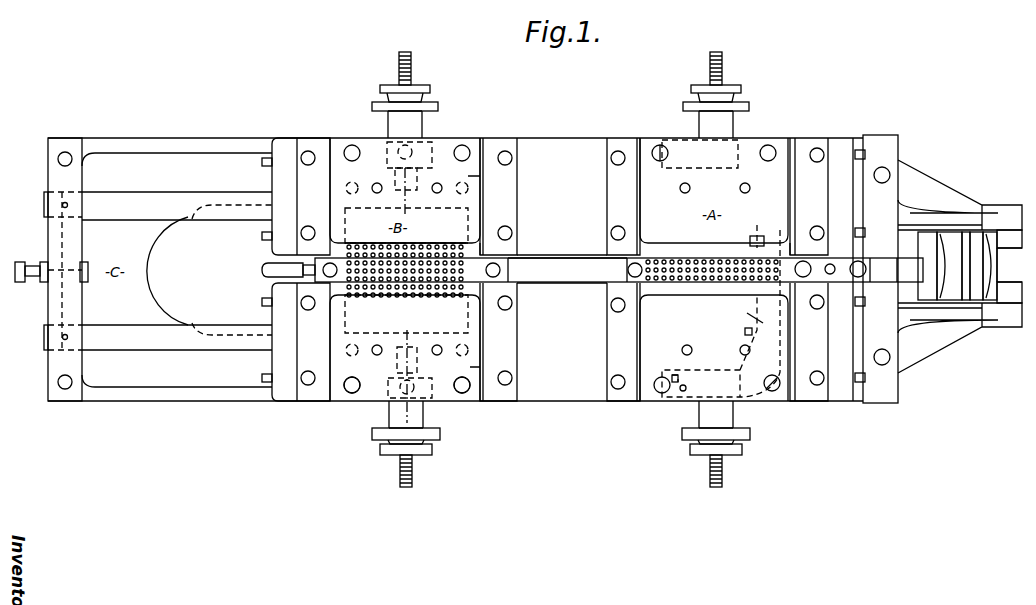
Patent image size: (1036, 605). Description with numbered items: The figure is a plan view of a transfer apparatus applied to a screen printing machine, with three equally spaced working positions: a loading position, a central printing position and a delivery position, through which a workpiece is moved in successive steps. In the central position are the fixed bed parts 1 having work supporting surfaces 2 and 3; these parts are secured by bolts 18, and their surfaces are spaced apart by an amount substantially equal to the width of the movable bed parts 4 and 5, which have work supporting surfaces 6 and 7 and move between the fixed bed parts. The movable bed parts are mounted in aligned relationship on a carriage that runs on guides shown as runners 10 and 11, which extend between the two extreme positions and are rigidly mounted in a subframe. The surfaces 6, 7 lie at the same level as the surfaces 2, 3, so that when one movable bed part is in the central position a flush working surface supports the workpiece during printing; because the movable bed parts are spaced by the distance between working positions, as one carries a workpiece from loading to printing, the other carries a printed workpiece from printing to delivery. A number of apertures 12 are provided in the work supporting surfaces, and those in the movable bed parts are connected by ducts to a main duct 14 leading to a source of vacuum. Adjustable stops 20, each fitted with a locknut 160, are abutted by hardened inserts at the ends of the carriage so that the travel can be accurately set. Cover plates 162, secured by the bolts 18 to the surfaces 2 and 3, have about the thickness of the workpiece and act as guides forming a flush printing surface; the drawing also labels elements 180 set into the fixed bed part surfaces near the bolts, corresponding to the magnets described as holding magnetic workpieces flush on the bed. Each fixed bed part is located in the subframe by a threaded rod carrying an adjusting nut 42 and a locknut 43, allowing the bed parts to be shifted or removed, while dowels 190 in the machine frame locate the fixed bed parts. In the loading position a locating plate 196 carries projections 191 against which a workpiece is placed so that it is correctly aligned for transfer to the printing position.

The fixed bed part 1 is at (382, 245).
The work supporting surface 2 is at (427, 248).
The work supporting surface 3 is at (423, 292).
The movable bed part 4 is at (508, 263).
The movable bed part 5 is at (627, 260).
The work supporting surface 6 is at (400, 265).
The work supporting surface 7 is at (697, 262).
The runner 10 is at (112, 332).
The runner 11 is at (127, 197).
The aperture 12 is at (473, 250).
The main duct 14 is at (278, 268).
The bolt 18 is at (357, 348).
The adjustable stop 20 is at (30, 263).
The adjusting nut 42 is at (441, 434).
The locknut 43 is at (382, 452).
The locknut 160 is at (42, 283).
The cover plate 162 is at (468, 176).
The pin 180 is at (436, 346).
The dowel 190 is at (352, 393).
The projection 191 is at (755, 236).
The locating plate 196 is at (755, 322).